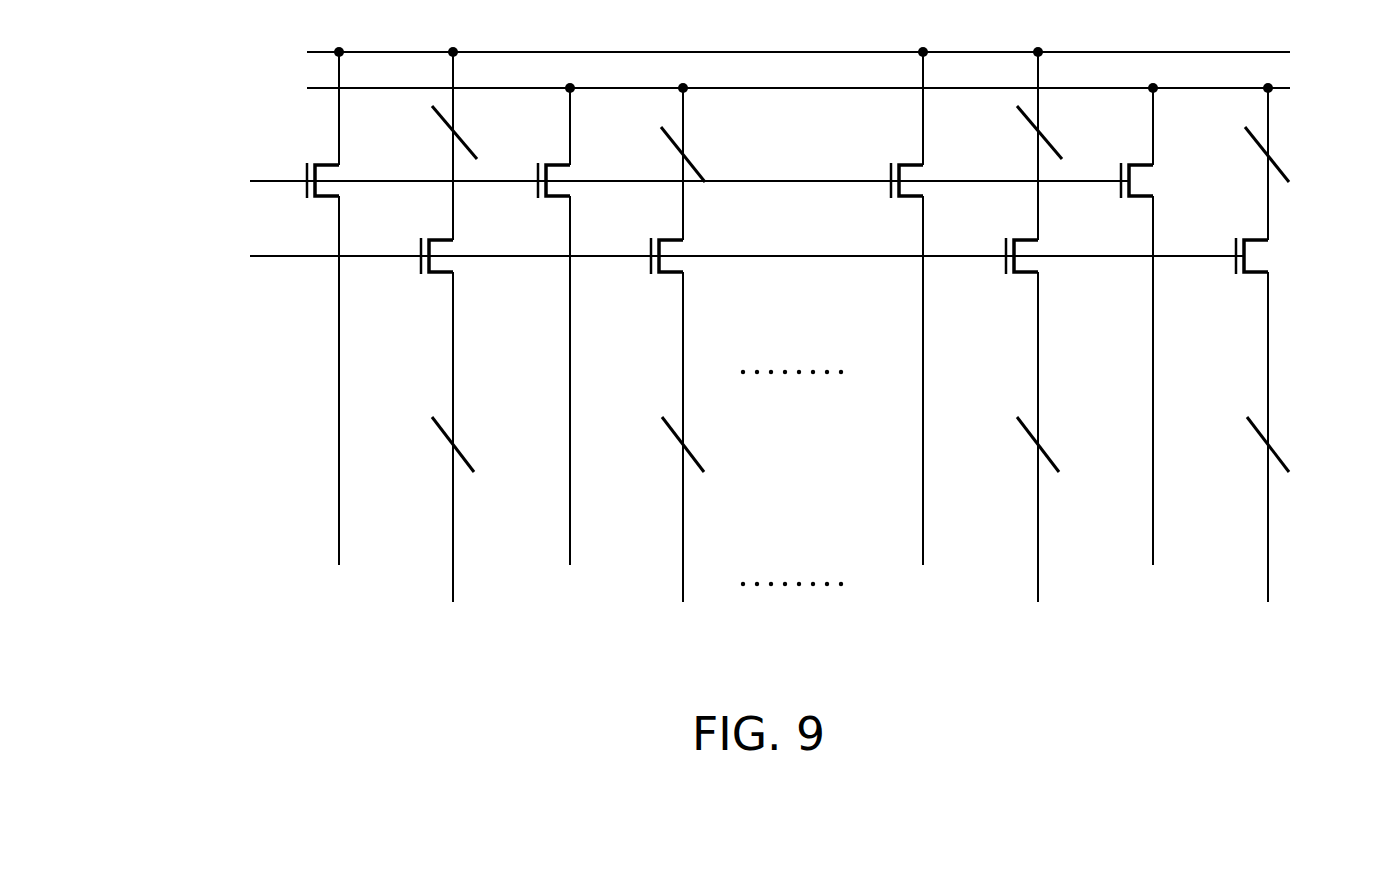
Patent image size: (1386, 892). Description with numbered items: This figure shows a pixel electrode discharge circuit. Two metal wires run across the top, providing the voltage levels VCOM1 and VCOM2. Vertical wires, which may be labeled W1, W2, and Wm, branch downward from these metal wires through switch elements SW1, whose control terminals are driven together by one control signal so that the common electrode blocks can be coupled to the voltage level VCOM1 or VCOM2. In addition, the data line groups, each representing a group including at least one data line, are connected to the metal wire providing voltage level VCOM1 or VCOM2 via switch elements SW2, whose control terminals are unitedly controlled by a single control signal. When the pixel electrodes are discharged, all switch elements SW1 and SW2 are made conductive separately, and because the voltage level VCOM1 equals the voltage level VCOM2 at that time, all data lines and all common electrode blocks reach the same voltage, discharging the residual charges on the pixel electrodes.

The switch element SW1 is at (340, 189).
The switch element SW2 is at (454, 264).
The voltage level VCOM1 is at (739, 53).
The voltage level VCOM2 is at (739, 88).
The first W line W1 is at (338, 329).
The second W line W2 is at (569, 347).
The m-th W line Wm is at (923, 329).